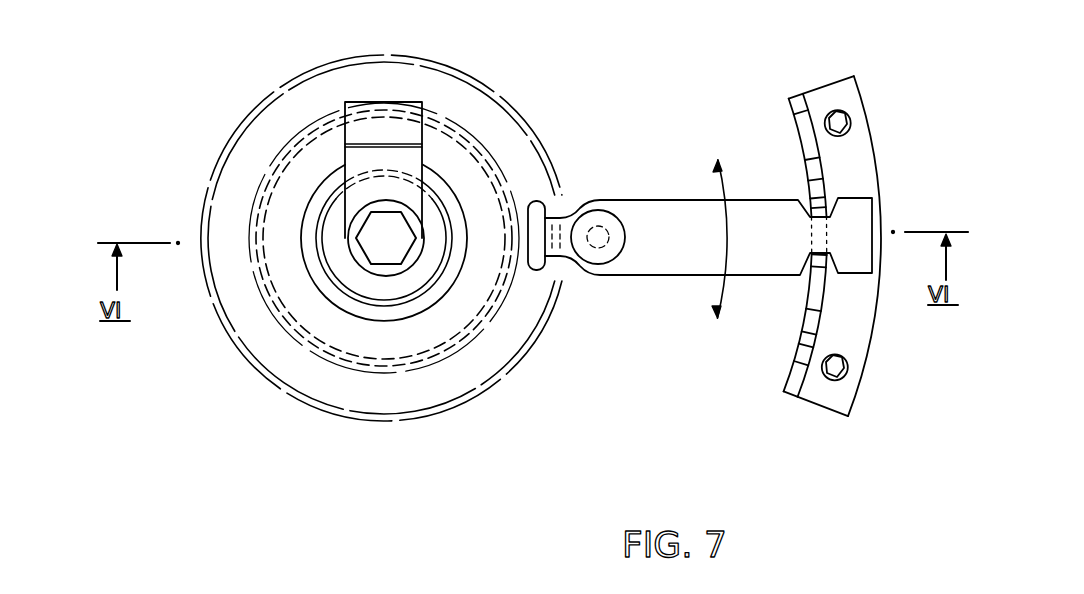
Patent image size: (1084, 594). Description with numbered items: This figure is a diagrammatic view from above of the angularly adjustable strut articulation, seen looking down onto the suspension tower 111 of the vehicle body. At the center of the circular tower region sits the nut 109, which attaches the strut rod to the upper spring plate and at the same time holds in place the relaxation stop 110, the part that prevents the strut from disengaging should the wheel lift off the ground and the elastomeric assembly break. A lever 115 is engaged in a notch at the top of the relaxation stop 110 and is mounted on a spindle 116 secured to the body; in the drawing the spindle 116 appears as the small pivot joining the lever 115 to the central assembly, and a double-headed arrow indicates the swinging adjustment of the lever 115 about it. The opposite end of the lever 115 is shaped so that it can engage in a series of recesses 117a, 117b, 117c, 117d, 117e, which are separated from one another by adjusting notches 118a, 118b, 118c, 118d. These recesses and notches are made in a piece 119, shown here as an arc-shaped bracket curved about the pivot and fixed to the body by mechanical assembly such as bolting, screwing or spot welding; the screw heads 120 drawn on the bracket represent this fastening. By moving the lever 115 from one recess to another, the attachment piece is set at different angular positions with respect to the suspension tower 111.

The nut 109 is at (400, 236).
The relaxation stop 110 is at (400, 118).
The suspension tower 111 is at (233, 203).
The lever 115 is at (658, 227).
The spindle 116 is at (595, 220).
The recess 117a is at (817, 93).
The recess 117b is at (817, 157).
The recess 117c is at (820, 213).
The recess 117d is at (820, 292).
The recess 117e is at (807, 343).
The adjusting notch 118a is at (823, 145).
The adjusting notch 118b is at (820, 178).
The adjusting notch 118c is at (810, 270).
The adjusting notch 118d is at (820, 323).
The arc-shaped bracket 119 is at (848, 390).
The fixing screw 120 is at (840, 122).